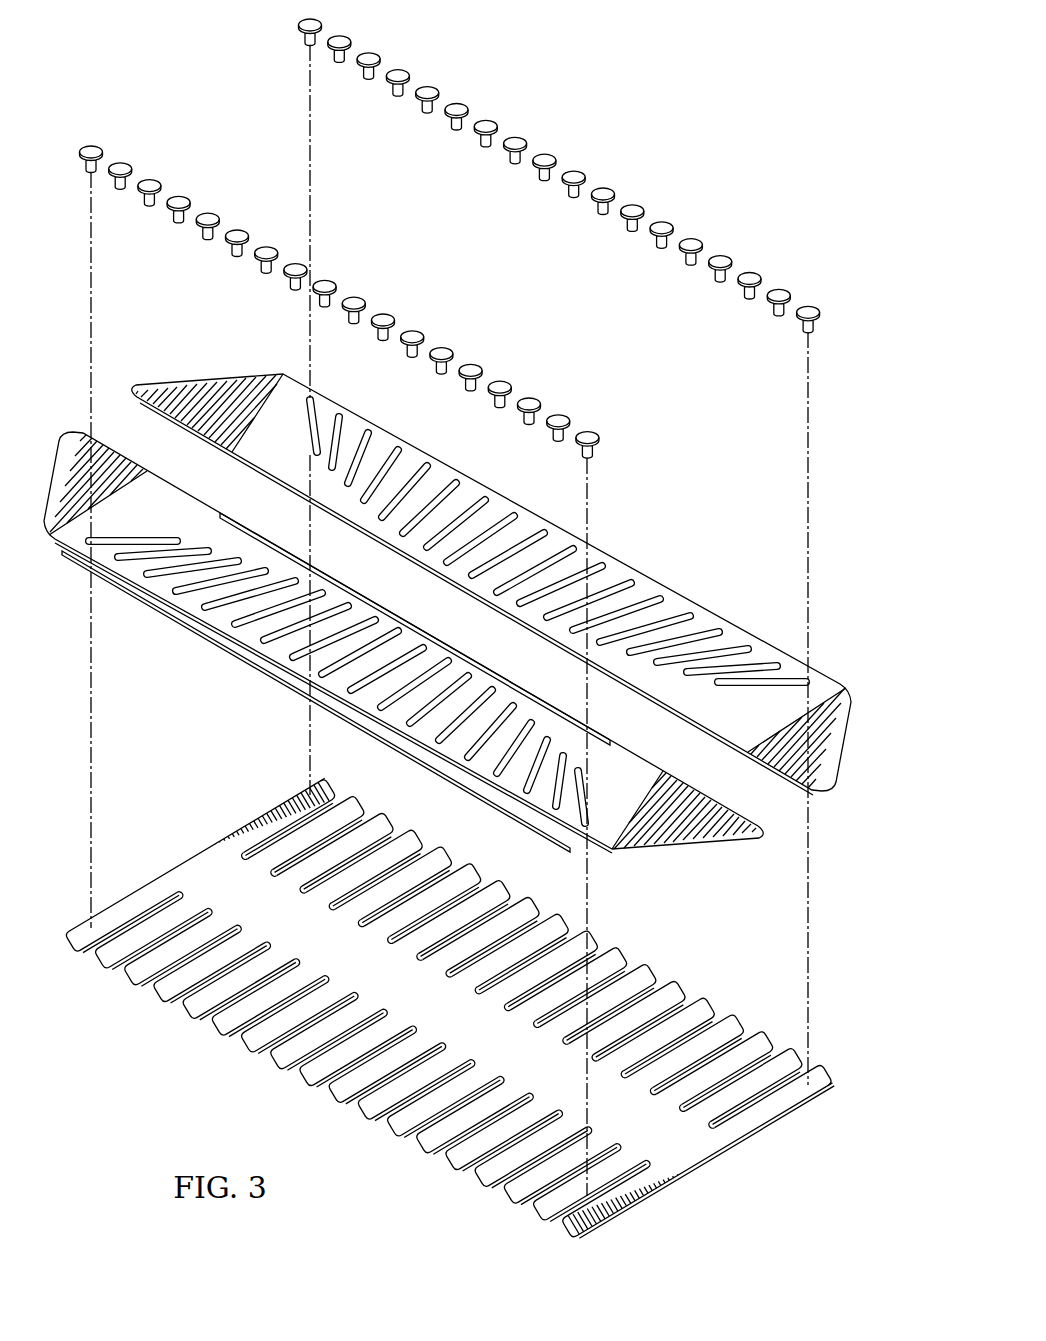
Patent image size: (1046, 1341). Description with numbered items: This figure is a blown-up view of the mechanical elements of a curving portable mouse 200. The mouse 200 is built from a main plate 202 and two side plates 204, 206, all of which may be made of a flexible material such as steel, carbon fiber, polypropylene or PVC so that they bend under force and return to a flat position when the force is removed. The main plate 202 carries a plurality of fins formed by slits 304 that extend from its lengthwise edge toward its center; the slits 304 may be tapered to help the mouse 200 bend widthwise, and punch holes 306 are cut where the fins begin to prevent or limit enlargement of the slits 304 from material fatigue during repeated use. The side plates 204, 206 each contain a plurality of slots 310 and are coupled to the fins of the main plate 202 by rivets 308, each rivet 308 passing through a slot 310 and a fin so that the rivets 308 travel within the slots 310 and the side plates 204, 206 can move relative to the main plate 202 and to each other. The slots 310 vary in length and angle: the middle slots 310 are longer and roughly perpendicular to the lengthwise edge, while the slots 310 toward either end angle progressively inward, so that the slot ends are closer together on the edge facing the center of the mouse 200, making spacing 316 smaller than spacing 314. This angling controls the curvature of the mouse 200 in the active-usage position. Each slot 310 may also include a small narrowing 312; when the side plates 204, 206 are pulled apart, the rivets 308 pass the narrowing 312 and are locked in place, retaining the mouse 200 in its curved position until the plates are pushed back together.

The mouse 200 is at (447, 645).
The main plate 202 is at (449, 1024).
The side plate 204 is at (684, 596).
The side plate 206 is at (403, 665).
The slits 304 is at (724, 1012).
The punch holes 306 is at (547, 1018).
The rivets 308 is at (210, 233).
The slots 310 is at (596, 821).
The narrowing 312 is at (180, 534).
The spacing 314 is at (265, 680).
The spacing 316 is at (416, 622).